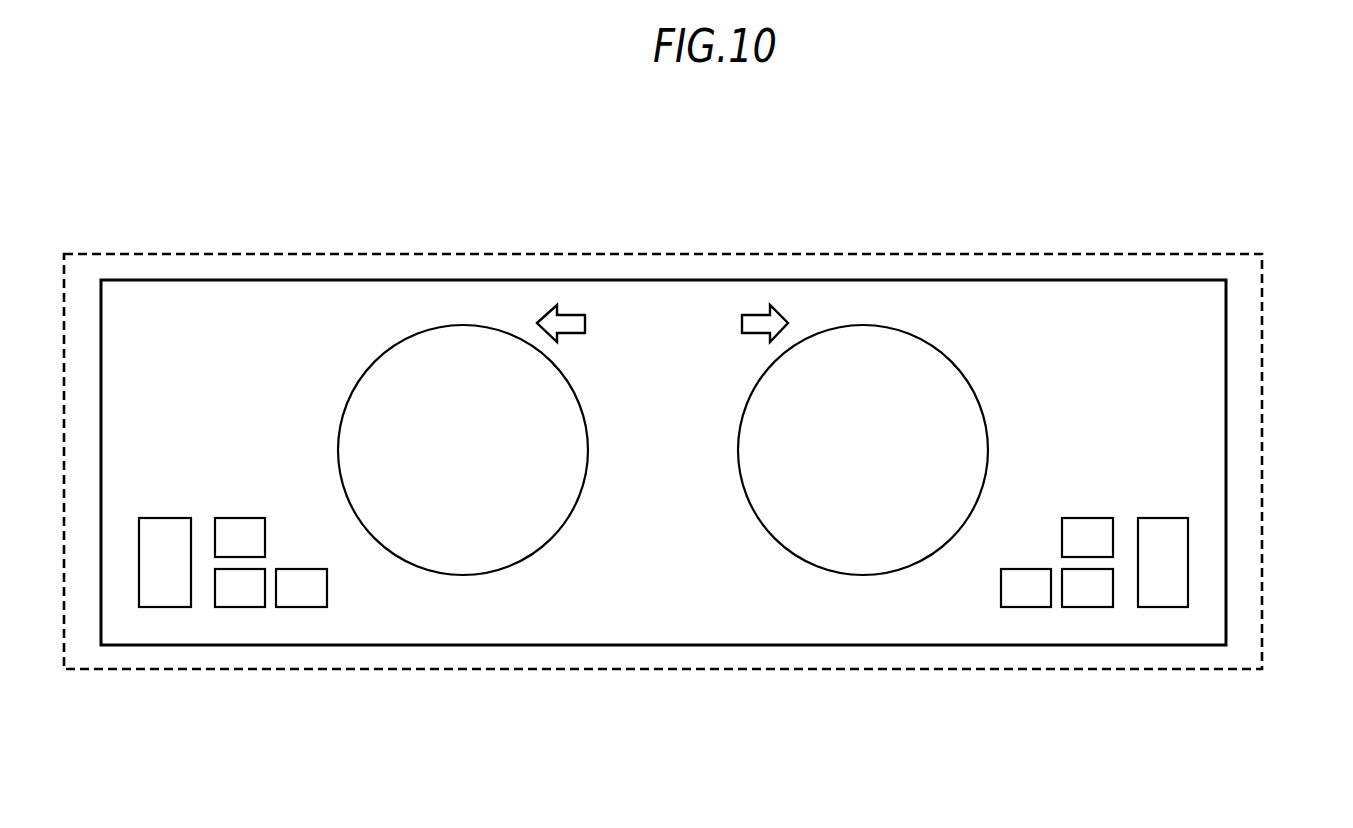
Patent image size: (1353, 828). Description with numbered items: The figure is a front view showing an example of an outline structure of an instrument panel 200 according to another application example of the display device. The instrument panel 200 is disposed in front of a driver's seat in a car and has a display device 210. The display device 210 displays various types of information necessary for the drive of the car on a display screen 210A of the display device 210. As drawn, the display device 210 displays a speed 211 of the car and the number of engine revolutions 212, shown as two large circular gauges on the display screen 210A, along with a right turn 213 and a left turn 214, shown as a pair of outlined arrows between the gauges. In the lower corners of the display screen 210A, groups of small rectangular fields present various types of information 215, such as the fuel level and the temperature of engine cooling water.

The instrument panel 200 is at (1143, 172).
The display device 210 is at (974, 254).
The display screen 210A is at (1228, 390).
The speed 211 is at (862, 548).
The number of engine revolutions 212 is at (462, 548).
The right turn 213 is at (753, 313).
The left turn 214 is at (568, 313).
The various types of information 215 is at (139, 618).